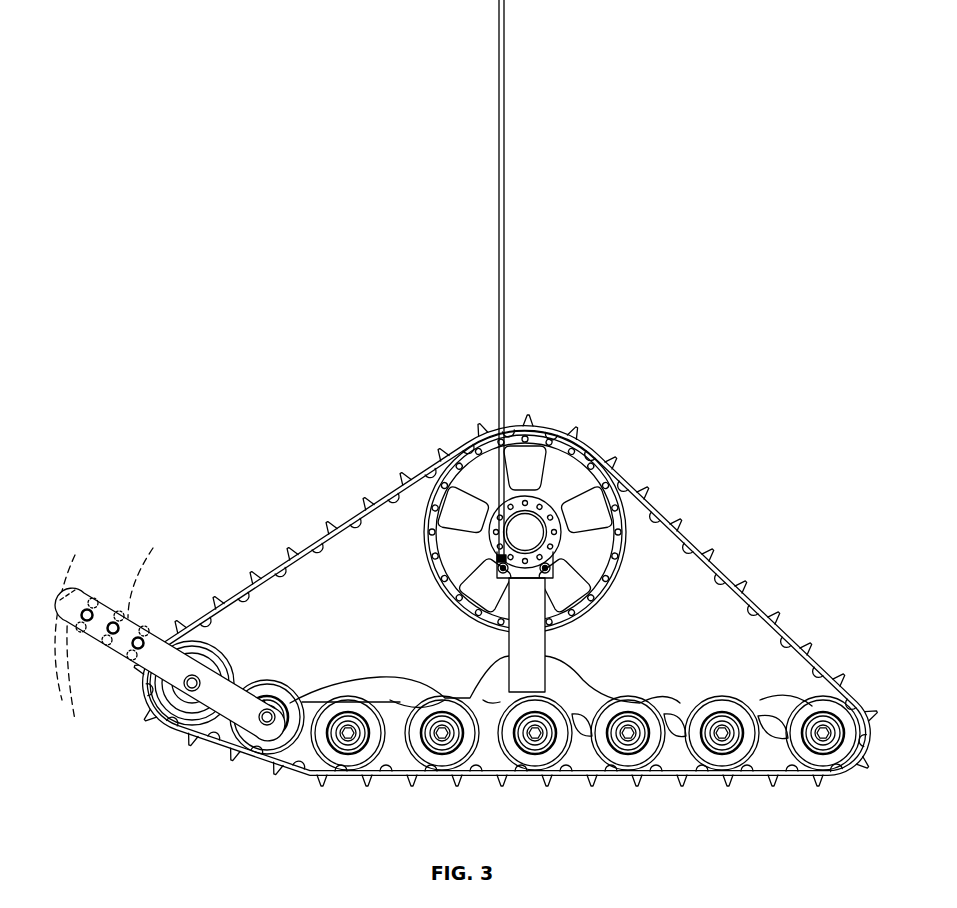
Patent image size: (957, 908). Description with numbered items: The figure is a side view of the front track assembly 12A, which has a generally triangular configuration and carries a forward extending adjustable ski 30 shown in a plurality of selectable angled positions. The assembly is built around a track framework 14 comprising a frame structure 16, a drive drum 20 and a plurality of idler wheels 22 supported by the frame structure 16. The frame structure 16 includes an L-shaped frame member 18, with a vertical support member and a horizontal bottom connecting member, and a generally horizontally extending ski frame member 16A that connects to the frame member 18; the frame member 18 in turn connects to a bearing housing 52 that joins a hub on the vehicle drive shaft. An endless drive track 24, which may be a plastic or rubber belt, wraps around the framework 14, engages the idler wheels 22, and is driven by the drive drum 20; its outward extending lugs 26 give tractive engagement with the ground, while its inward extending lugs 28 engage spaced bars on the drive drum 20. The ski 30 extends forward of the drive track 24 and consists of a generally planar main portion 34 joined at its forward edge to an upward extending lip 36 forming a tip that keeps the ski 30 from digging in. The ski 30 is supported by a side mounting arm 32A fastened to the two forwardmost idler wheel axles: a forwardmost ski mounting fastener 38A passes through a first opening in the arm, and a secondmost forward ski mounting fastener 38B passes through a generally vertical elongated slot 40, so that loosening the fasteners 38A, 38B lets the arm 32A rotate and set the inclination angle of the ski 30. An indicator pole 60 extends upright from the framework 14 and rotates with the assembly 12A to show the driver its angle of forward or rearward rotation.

The front track assembly 12A is at (192, 456).
The track framework 14 is at (662, 558).
The frame structure 16 is at (590, 640).
The ski frame member 16A is at (572, 686).
The L-shaped frame member 18 is at (518, 634).
The drive drum 20 is at (412, 516).
The idler wheels 22 is at (367, 695).
The drive track 24 is at (772, 600).
The outward extending lugs 26 is at (292, 552).
The inward extending lugs 28 is at (372, 527).
The forward extending ski 30 is at (168, 618).
The side mounting arm 32A is at (165, 650).
The main portion 34 is at (113, 622).
The upward extending lip 36 is at (72, 598).
The forwardmost ski mounting fastener 38A is at (193, 687).
The secondmost forward ski mounting fastener 38B is at (268, 726).
The elongated slot 40 is at (262, 700).
The bearing housing 52 is at (530, 532).
The indicator pole 60 is at (504, 168).